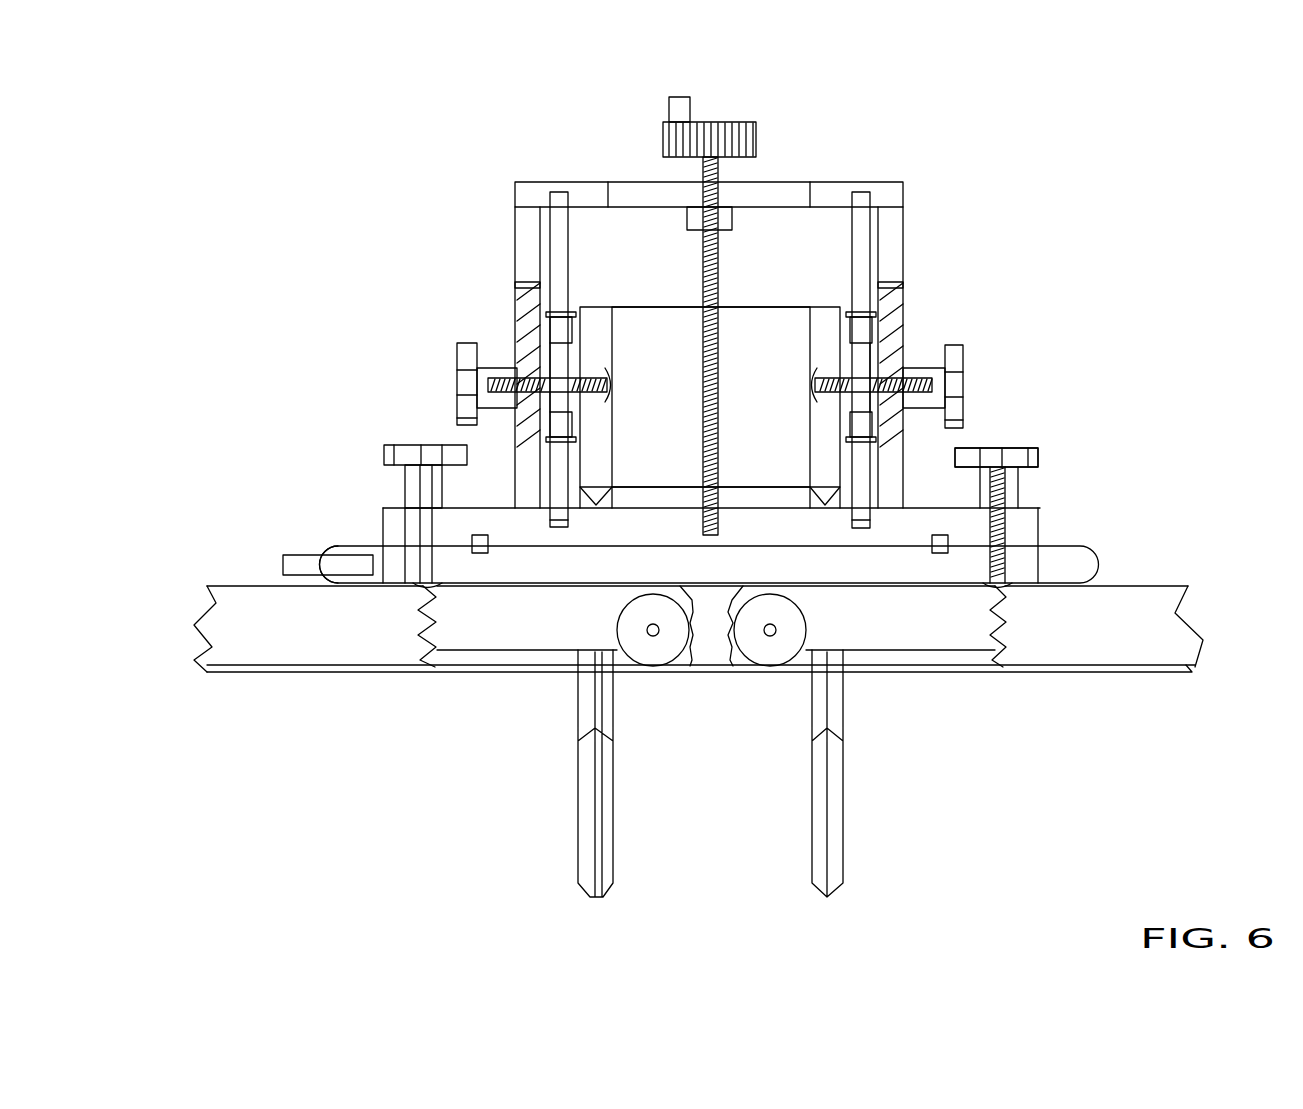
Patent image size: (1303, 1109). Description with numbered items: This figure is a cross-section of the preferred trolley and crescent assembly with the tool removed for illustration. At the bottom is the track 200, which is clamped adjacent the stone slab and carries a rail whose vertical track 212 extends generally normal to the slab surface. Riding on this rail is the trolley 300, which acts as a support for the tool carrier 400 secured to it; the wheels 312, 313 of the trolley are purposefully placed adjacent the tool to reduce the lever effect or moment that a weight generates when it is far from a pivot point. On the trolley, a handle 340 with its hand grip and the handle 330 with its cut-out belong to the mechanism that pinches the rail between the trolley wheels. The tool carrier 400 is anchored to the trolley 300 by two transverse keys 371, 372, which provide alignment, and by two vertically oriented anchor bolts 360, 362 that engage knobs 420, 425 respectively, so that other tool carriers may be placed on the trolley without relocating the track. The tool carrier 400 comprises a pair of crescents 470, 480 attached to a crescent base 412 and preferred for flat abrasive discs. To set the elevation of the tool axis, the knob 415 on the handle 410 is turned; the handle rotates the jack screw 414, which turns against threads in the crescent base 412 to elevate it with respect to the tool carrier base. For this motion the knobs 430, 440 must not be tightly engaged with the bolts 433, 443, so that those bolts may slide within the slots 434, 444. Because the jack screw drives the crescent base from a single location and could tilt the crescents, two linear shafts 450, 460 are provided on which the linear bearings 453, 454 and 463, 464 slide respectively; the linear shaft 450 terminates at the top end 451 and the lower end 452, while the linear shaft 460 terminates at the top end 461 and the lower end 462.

The track 200 is at (1192, 597).
The vertical track 212 is at (250, 648).
The trolley 300 is at (1098, 560).
The wheel 312 is at (650, 658).
The wheel 313 is at (770, 657).
The handle 330 is at (342, 563).
The handle 340 is at (283, 565).
The anchor bolt 360 is at (423, 508).
The anchor bolt 362 is at (942, 547).
The transverse key 371 is at (473, 545).
The transverse key 372 is at (1022, 537).
The tool carrier 400 is at (903, 198).
The handle 410 is at (740, 130).
The crescent base 412 is at (781, 471).
The jack screw 414 is at (713, 197).
The knob 415 is at (682, 105).
The knob 420 is at (388, 444).
The knob 425 is at (1033, 452).
The knob 430 is at (465, 380).
The bolt 433 is at (560, 368).
The slot 434 is at (527, 310).
The knob 440 is at (960, 357).
The bolt 443 is at (813, 384).
The slot 444 is at (893, 302).
The linear shaft 450 is at (558, 367).
The end 451 is at (557, 198).
The lower end 452 is at (557, 528).
The linear bearing 453 is at (562, 432).
The linear bearing 454 is at (568, 330).
The linear shaft 460 is at (863, 367).
The top end 461 is at (865, 192).
The lower end 462 is at (860, 520).
The linear bearing 463 is at (857, 427).
The linear bearing 464 is at (857, 335).
The crescent 470 is at (845, 797).
The crescent 480 is at (576, 797).